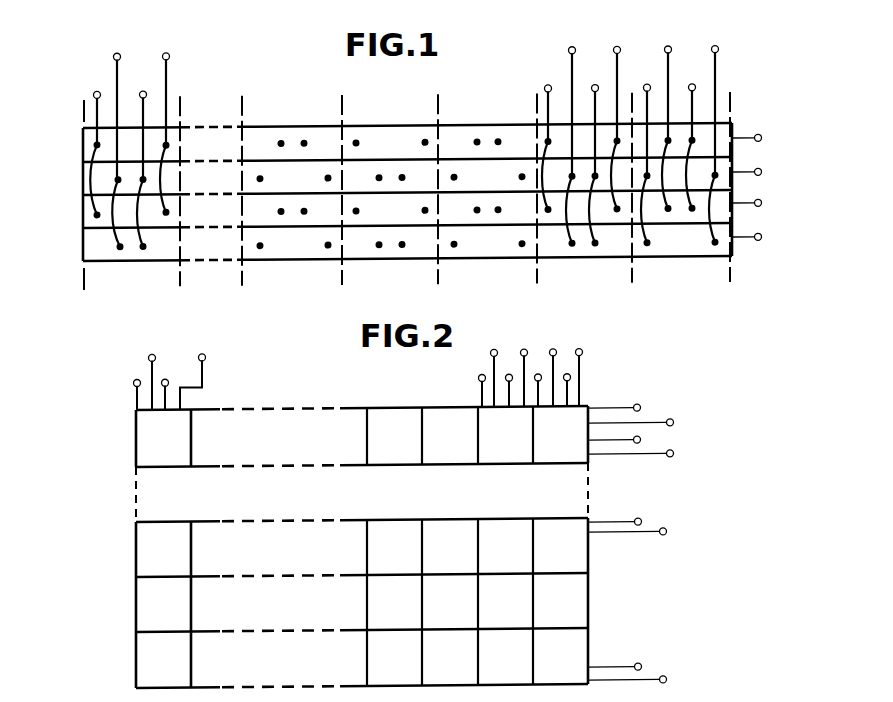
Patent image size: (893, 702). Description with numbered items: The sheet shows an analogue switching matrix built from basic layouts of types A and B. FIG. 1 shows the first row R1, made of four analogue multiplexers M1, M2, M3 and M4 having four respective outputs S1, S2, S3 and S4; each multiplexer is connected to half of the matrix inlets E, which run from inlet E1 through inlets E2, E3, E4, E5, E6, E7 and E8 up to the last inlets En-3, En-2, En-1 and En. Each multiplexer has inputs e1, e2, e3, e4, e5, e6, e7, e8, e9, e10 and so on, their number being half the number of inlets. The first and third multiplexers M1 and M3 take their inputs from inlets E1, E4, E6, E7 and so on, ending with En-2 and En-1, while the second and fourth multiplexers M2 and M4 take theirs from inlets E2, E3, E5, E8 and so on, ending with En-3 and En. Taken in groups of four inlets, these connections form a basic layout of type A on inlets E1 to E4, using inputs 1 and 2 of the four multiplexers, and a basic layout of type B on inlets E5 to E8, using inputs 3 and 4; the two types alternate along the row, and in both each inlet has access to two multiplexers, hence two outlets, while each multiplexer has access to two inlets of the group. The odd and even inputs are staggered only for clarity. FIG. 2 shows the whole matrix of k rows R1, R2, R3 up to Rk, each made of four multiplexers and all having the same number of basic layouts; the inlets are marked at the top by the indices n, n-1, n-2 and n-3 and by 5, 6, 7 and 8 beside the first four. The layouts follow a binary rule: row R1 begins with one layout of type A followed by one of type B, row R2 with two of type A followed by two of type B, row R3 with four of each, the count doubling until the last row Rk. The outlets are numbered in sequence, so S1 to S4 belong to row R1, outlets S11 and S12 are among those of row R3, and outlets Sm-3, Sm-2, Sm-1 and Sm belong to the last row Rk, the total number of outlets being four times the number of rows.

In FIG. 1, the matrix inlet En is at (88, 143).
In FIG. 1, the matrix inlet En-1 is at (116, 138).
In FIG. 1, the matrix inlet En-2 is at (141, 158).
In FIG. 1, the matrix inlet En-3 is at (177, 120).
In FIG. 1, the matrix inlet E1 is at (715, 131).
In FIG. 1, the matrix inlet E2 is at (693, 135).
In FIG. 1, the matrix inlet E3 is at (668, 114).
In FIG. 1, the matrix inlet E4 is at (648, 153).
In FIG. 1, the matrix inlet E5 is at (617, 115).
In FIG. 1, the matrix inlet E6 is at (596, 153).
In FIG. 1, the matrix inlet E7 is at (572, 132).
In FIG. 1, the matrix inlet E8 is at (549, 136).
In FIG. 1, the first analogue multiplexer M1 is at (100, 249).
In FIG. 1, the second analogue multiplexer M2 is at (90, 215).
In FIG. 1, the third analogue multiplexer M3 is at (90, 181).
In FIG. 1, the fourth analogue multiplexer M4 is at (95, 145).
In FIG. 1, the multiplexer output S1 is at (762, 236).
In FIG. 2, the multiplexer output S1 is at (651, 684).
In FIG. 1, the multiplexer output S2 is at (762, 202).
In FIG. 2, the multiplexer output S2 is at (632, 656).
In FIG. 1, the multiplexer output S3 is at (762, 171).
In FIG. 1, the multiplexer output S4 is at (762, 137).
In FIG. 1, the multiplexer input e1 is at (692, 213).
In FIG. 1, the multiplexer input e2 is at (647, 247).
In FIG. 1, the multiplexer input e3 is at (595, 247).
In FIG. 1, the multiplexer input e4 is at (548, 213).
In FIG. 1, the multiplexer input e5 is at (498, 213).
In FIG. 1, the multiplexer input e6 is at (477, 213).
In FIG. 1, the multiplexer input e7 is at (425, 213).
In FIG. 1, the multiplexer input e8 is at (356, 213).
In FIG. 1, the multiplexer input e9 is at (304, 213).
In FIG. 1, the multiplexer input e10 is at (260, 247).
In FIG. 1, the basic type A layout A is at (489, 278).
In FIG. 2, the basic type A layout A is at (362, 547).
In FIG. 1, the basic type B layout B is at (359, 280).
In FIG. 2, the basic type B layout B is at (335, 603).
In FIG. 2, the matrix inlets E is at (125, 334).
In FIG. 2, the number of matrix inlets n is at (137, 385).
In FIG. 2, the inlet index n-1 is at (150, 372).
In FIG. 2, the inlet index n-2 is at (173, 385).
In FIG. 2, the inlet index n-3 is at (199, 371).
In FIG. 2, the first input 1 is at (579, 366).
In FIG. 2, the second input 2 is at (567, 379).
In FIG. 2, the third input 3 is at (553, 366).
In FIG. 2, the fourth input 4 is at (538, 379).
In FIG. 2, the fifth inlet 5 is at (524, 367).
In FIG. 2, the sixth inlet 6 is at (509, 380).
In FIG. 2, the seventh inlet 7 is at (494, 367).
In FIG. 2, the eighth inlet 8 is at (481, 380).
In FIG. 2, the last row Rk is at (147, 456).
In FIG. 2, the first row R1 is at (147, 668).
In FIG. 2, the second row R2 is at (147, 613).
In FIG. 2, the third row R3 is at (147, 558).
In FIG. 2, the matrix outlet Sm is at (635, 403).
In FIG. 2, the matrix outlet Sm-1 is at (664, 420).
In FIG. 2, the matrix outlet Sm-2 is at (647, 440).
In FIG. 2, the matrix outlet Sm-3 is at (664, 462).
In FIG. 2, the matrix outlet S11 is at (659, 534).
In FIG. 2, the matrix outlet S12 is at (639, 511).